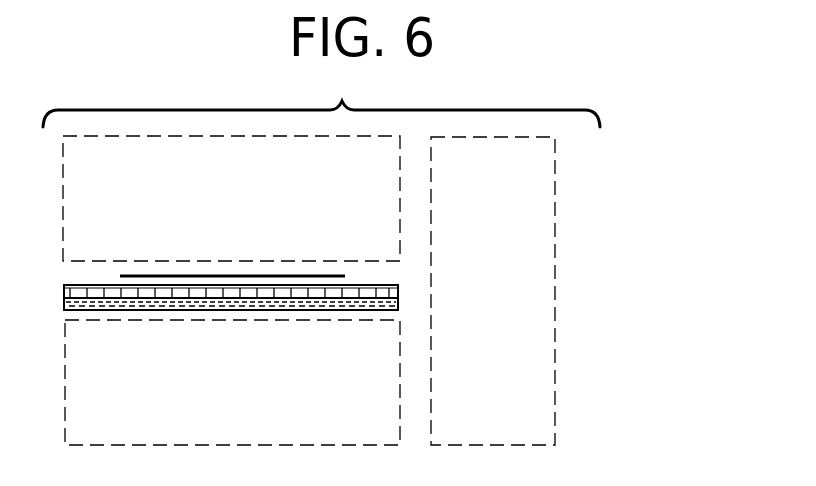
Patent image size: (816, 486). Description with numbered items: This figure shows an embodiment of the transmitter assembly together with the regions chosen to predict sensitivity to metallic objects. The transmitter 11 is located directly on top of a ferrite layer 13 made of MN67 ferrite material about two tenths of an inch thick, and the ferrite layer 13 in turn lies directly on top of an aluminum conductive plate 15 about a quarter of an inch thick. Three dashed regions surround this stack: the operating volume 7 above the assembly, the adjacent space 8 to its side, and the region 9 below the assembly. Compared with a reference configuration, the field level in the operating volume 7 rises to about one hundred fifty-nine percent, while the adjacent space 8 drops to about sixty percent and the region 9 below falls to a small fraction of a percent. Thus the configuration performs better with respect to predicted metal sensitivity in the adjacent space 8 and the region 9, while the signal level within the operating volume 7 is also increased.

The operating volume 7 is at (261, 189).
The adjacent space 8 is at (491, 246).
The region below the transmitter assembly 9 is at (223, 392).
The transmitter 11 is at (294, 275).
The ferrite layer 13 is at (398, 288).
The aluminum conductive plate 15 is at (398, 301).